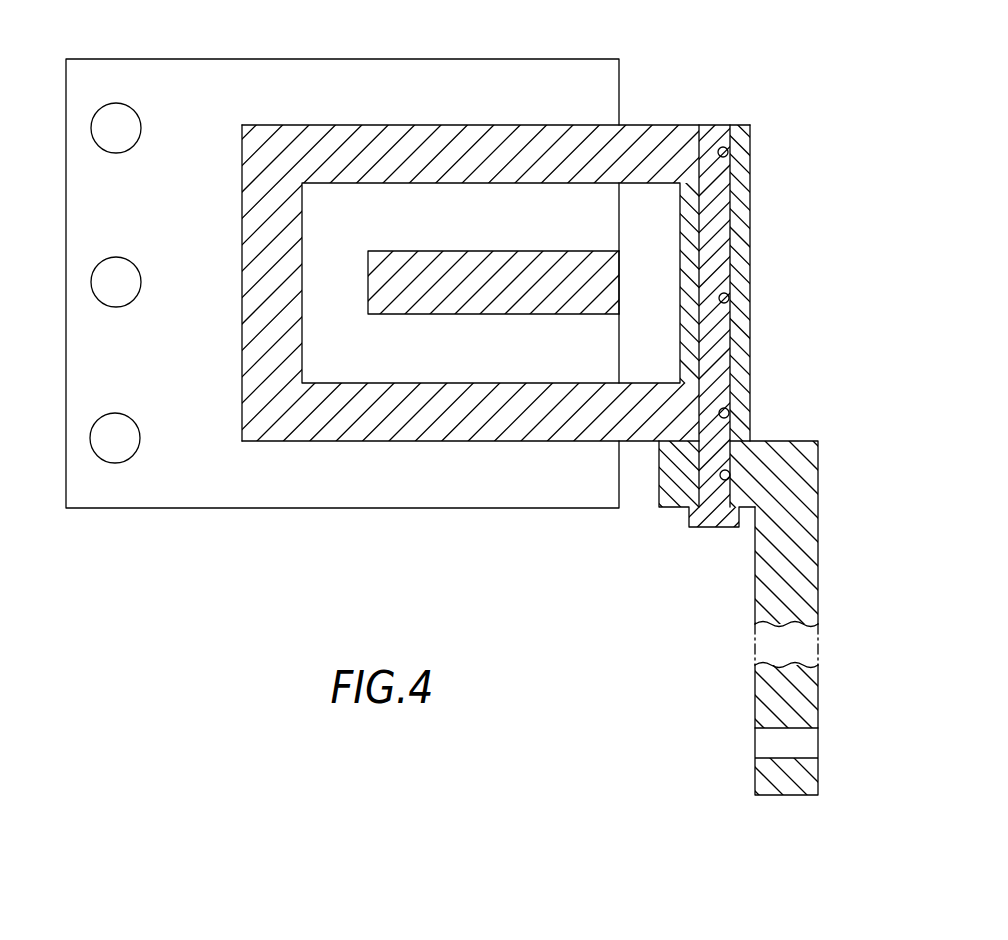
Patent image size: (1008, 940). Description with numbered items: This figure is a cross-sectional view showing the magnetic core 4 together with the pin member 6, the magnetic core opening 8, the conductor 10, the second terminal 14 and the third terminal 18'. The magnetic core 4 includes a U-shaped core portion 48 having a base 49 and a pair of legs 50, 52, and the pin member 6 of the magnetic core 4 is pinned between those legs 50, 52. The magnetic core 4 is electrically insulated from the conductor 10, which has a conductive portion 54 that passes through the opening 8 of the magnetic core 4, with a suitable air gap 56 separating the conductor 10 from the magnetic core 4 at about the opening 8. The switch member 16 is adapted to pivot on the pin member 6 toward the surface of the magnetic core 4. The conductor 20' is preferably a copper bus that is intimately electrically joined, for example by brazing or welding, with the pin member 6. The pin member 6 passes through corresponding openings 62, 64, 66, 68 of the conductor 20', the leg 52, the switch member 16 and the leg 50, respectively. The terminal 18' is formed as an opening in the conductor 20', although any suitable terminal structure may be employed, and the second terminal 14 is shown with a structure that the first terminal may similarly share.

The magnetic core 4 is at (662, 122).
The pin member 6 is at (717, 124).
The magnetic core opening 8 is at (637, 184).
The conductor 10 is at (621, 296).
The second terminal 14 is at (95, 453).
The switch member 16 is at (751, 229).
The third terminal 18' is at (762, 761).
The conductor 20' is at (762, 696).
The U-shaped core portion 48 is at (504, 296).
The base 49 is at (253, 352).
The leg 50 is at (518, 138).
The leg 52 is at (383, 434).
The conductive portion 54 is at (550, 264).
The air gap 56 is at (375, 193).
The opening 62 is at (731, 479).
The opening 64 is at (731, 409).
The opening 66 is at (731, 302).
The opening 68 is at (730, 150).